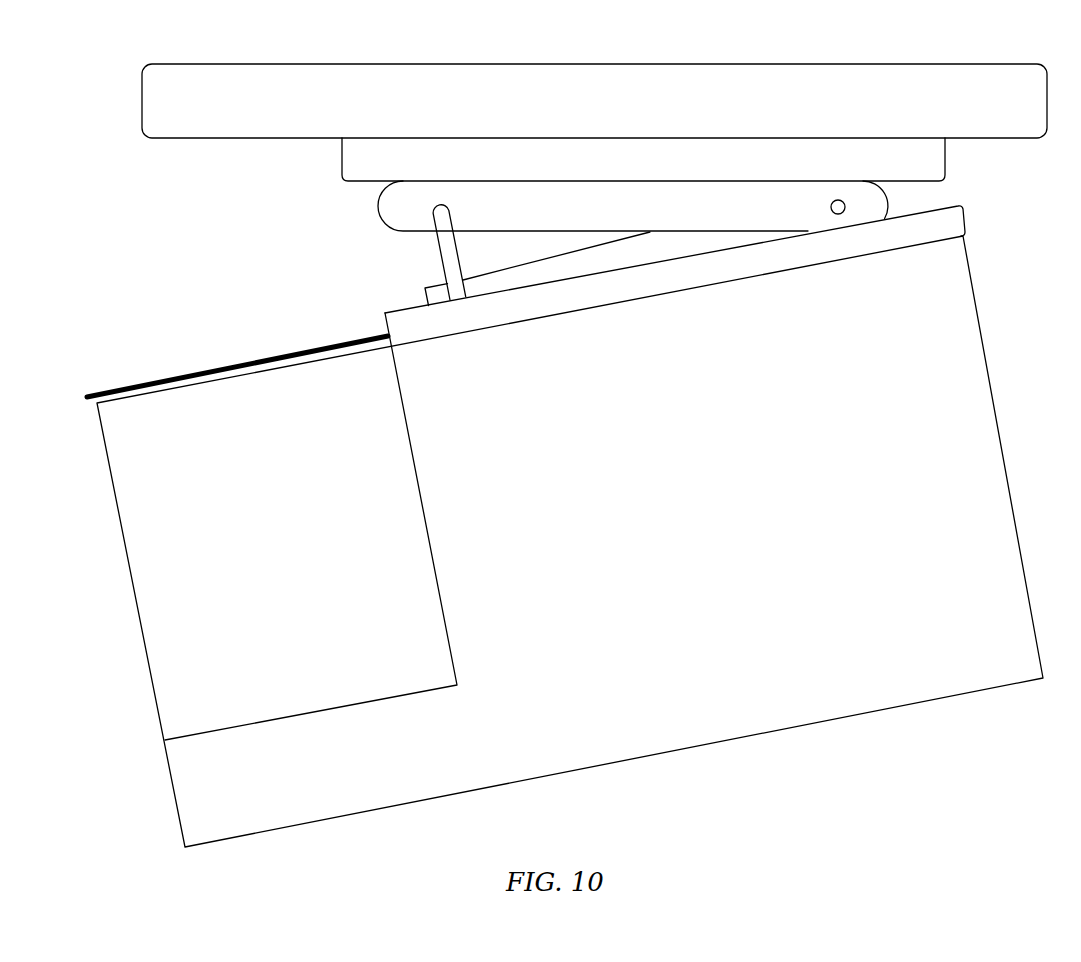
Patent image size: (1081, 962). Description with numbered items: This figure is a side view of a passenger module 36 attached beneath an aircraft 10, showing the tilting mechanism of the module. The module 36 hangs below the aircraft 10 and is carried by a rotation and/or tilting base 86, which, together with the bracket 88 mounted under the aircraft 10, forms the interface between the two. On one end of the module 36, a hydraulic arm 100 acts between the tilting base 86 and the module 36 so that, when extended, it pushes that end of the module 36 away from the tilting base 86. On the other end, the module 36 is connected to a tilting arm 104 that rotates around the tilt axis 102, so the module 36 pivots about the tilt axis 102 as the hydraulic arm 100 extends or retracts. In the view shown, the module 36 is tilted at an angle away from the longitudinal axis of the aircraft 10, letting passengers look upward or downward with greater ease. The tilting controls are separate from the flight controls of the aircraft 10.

The tractor aircraft 10 is at (327, 62).
The module 36 is at (733, 738).
The tilting base 86 is at (397, 220).
The mounting bracket 88 is at (340, 163).
The hydraulic arm 100 is at (440, 259).
The tilt axis 102 is at (847, 205).
The tilting arm 104 is at (708, 243).